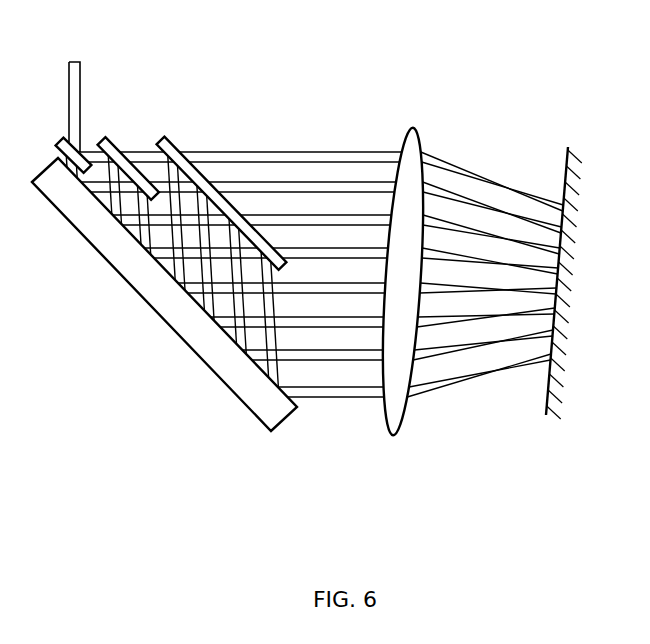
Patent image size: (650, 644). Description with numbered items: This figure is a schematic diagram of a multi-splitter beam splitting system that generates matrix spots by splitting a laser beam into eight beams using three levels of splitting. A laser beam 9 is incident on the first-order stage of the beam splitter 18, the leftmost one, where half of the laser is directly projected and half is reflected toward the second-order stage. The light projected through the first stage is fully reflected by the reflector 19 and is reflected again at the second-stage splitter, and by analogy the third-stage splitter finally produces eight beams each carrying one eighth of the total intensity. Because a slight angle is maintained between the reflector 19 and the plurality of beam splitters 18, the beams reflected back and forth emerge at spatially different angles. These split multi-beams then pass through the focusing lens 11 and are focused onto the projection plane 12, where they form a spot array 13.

The laser beam 9 is at (73, 60).
The focusing lens 11 is at (405, 118).
The projection plane 12 is at (556, 143).
The spot array 13 is at (545, 345).
The beam splitter 18 is at (88, 130).
The reflector 19 is at (122, 295).